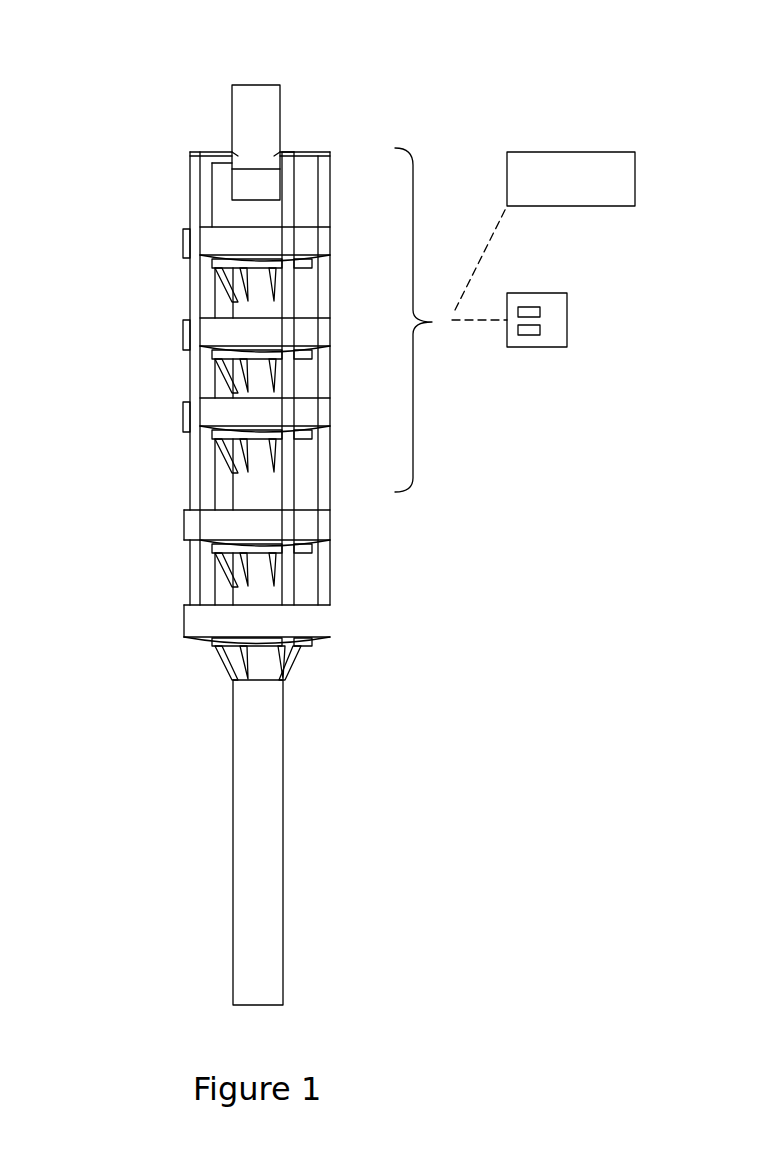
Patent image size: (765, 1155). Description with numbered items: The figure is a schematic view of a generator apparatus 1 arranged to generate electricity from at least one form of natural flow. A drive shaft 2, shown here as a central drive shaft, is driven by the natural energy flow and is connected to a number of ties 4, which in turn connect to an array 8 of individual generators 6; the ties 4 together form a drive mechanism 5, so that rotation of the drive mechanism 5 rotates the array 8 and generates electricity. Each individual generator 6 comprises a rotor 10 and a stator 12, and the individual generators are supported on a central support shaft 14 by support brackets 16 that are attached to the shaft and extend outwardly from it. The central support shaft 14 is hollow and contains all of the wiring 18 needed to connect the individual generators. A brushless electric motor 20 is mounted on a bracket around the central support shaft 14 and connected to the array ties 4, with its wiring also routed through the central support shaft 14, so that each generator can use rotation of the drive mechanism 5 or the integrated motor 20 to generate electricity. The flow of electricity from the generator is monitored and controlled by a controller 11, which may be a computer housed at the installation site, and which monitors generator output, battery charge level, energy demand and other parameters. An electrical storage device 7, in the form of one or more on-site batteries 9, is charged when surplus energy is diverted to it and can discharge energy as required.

The generator apparatus 1 is at (128, 66).
The drive shaft 2 is at (232, 111).
The ties 4 is at (290, 192).
The drive mechanism 5 is at (303, 117).
The individual generator 6 is at (185, 244).
The electrical storage device 7 is at (540, 293).
The generator array 8 is at (451, 320).
The battery 9 is at (540, 311).
The rotor 10 is at (313, 620).
The controller 11 is at (573, 152).
The stator 12 is at (223, 442).
The central support shaft 14 is at (253, 718).
The support brackets 16 is at (221, 368).
The wiring 18 is at (297, 660).
The brushless electric motor 20 is at (197, 523).